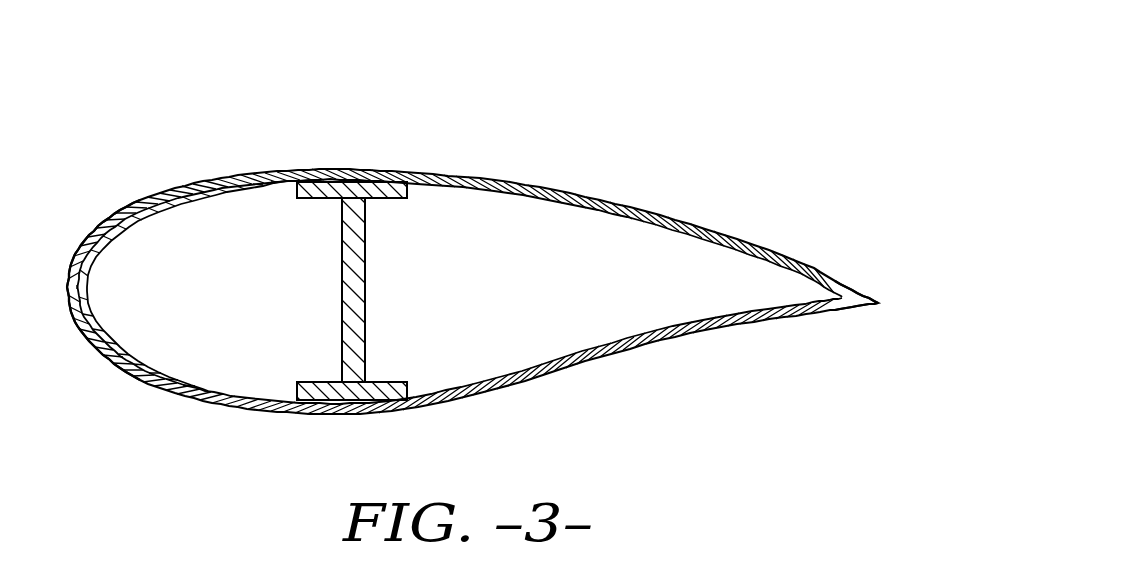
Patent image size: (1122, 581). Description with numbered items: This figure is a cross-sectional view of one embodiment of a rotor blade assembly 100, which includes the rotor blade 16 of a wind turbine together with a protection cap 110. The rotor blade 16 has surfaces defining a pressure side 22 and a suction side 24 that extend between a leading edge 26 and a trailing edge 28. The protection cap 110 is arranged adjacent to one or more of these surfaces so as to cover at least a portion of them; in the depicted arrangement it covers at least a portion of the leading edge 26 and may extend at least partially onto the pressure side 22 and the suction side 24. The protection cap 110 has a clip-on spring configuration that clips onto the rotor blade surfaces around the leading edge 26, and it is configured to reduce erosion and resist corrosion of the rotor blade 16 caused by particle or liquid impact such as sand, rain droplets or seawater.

The rotor blade assembly 100 is at (682, 101).
The protection cap 110 is at (70, 227).
The rotor blade 16 is at (696, 205).
The suction side 24 is at (432, 172).
The pressure side 22 is at (435, 405).
The leading edge 26 is at (67, 300).
The trailing edge 28 is at (880, 303).